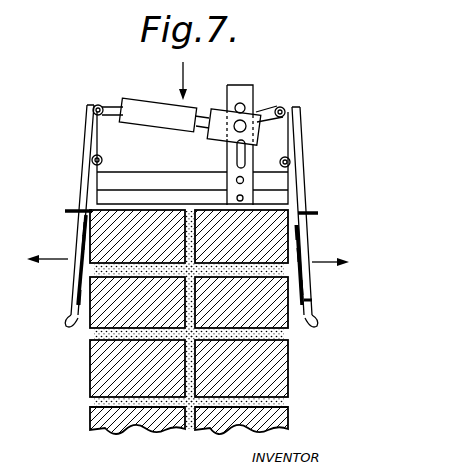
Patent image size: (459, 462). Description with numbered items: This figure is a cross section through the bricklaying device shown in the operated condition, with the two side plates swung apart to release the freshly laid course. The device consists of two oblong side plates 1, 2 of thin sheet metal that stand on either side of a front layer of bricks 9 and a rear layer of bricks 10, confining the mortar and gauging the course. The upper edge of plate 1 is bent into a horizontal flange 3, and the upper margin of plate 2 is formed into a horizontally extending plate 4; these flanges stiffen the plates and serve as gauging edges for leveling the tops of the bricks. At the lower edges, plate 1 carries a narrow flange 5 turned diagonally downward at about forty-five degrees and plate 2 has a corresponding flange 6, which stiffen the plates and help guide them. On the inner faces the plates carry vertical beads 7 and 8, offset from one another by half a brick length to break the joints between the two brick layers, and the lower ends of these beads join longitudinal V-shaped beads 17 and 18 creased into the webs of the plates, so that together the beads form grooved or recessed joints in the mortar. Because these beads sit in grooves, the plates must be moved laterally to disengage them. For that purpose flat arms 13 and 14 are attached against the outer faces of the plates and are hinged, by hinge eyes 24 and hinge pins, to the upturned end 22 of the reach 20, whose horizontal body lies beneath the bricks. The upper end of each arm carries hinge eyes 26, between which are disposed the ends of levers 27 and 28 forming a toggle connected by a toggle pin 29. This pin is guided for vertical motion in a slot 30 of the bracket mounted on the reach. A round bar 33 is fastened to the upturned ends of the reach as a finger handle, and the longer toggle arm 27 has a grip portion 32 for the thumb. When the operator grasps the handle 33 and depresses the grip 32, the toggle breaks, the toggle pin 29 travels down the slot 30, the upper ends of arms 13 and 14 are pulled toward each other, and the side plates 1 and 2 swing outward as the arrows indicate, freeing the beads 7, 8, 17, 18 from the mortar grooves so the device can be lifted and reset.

The side plate 1 is at (80, 278).
The side plate 2 is at (308, 297).
The horizontal flange 3 is at (77, 208).
The horizontally extending plate 4 is at (317, 215).
The narrow flange 5 is at (72, 318).
The lower edge flange 6 is at (313, 322).
The vertical beads 7 is at (88, 245).
The vertical beads 8 is at (308, 254).
The bricks 9 is at (84, 232).
The bricks 10 is at (273, 233).
The arm 13 is at (86, 128).
The arm 14 is at (300, 120).
The longitudinal V-shaped bead 17 is at (77, 298).
The longitudinal V-shaped bead 18 is at (304, 290).
The reach 20 is at (168, 207).
The upturned end 22 is at (292, 193).
The hinge eyes 24 is at (91, 160).
The hinge eyes 26 is at (95, 106).
The toggle arm 27 is at (99, 104).
The lever 28 is at (272, 110).
The toggle pin 29 is at (238, 124).
The slot 30 is at (243, 152).
The grip portion 32 is at (151, 107).
The round bar 33 is at (165, 178).